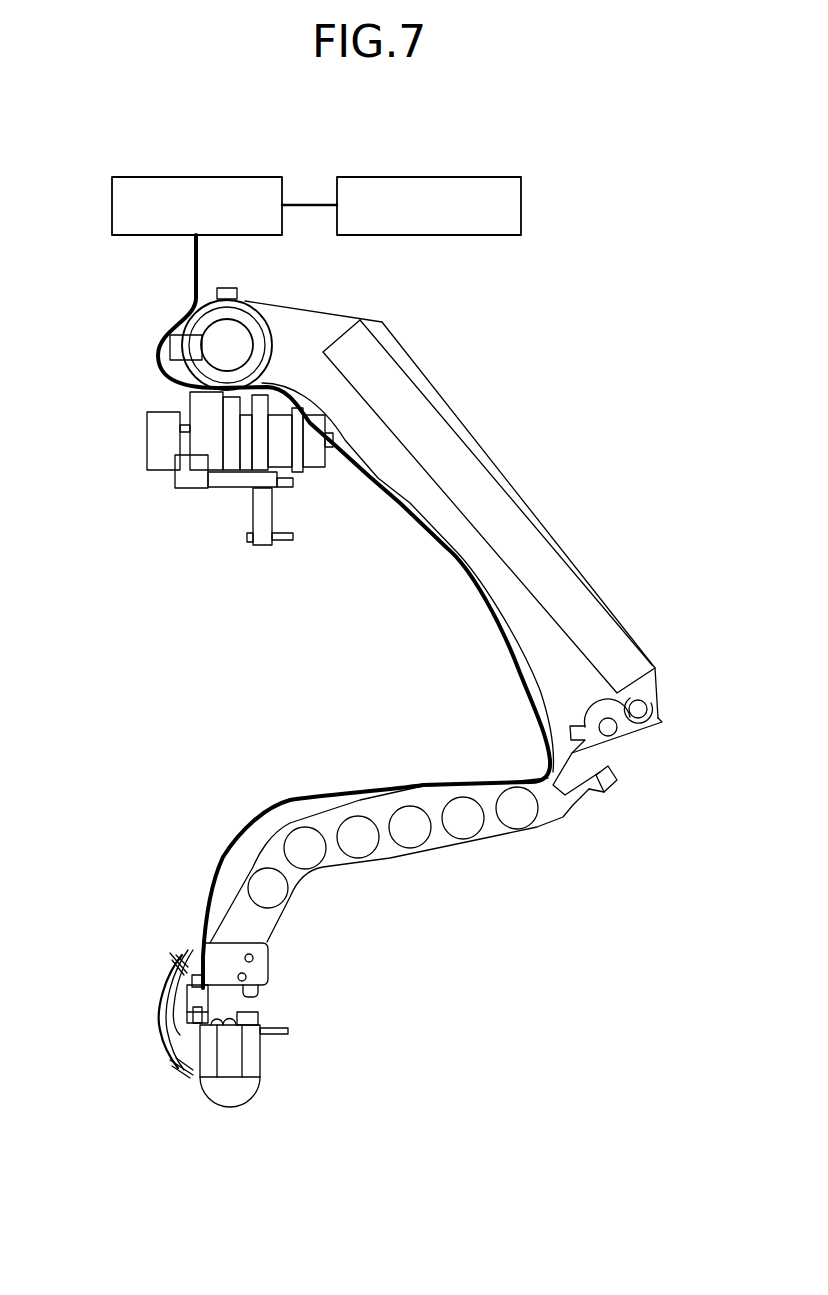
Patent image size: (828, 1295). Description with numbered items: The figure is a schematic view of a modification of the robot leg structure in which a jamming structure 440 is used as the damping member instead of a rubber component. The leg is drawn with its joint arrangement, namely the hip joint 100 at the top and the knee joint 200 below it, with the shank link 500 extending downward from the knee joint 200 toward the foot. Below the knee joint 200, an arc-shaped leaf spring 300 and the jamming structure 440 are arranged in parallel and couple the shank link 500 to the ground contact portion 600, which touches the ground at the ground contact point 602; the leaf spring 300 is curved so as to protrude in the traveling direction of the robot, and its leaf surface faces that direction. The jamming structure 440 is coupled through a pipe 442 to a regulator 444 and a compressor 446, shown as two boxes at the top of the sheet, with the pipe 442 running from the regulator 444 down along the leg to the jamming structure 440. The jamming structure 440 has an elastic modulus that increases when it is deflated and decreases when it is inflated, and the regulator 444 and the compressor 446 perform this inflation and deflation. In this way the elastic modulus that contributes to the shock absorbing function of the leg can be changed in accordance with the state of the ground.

The regulator 444 is at (197, 175).
The compressor 446 is at (423, 175).
The hip joint 100 is at (237, 350).
The knee joint 200 is at (611, 730).
The shank link 500 is at (380, 817).
The pipe 442 is at (255, 815).
The jamming structure 440 is at (187, 993).
The leaf spring 300 is at (153, 1027).
The ground contact portion 600 is at (272, 1088).
The ground contact point 602 is at (233, 1110).